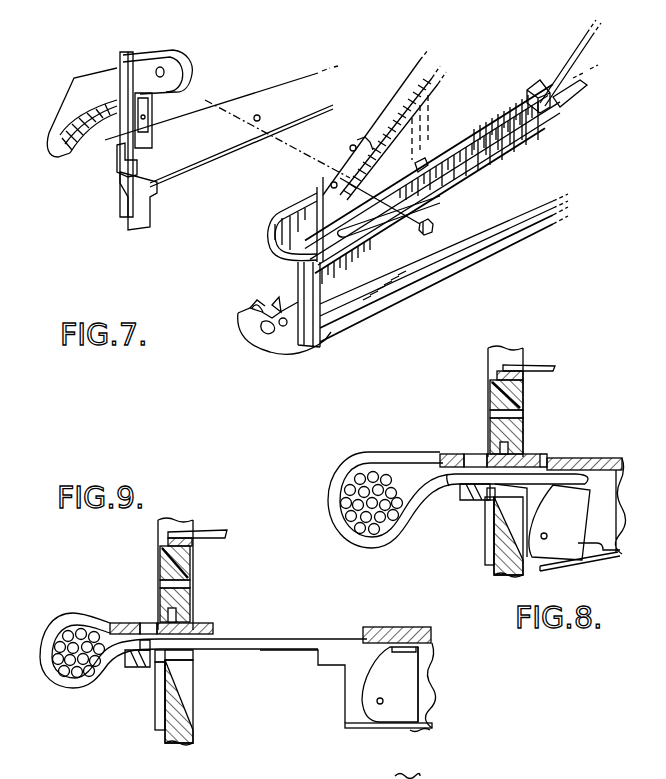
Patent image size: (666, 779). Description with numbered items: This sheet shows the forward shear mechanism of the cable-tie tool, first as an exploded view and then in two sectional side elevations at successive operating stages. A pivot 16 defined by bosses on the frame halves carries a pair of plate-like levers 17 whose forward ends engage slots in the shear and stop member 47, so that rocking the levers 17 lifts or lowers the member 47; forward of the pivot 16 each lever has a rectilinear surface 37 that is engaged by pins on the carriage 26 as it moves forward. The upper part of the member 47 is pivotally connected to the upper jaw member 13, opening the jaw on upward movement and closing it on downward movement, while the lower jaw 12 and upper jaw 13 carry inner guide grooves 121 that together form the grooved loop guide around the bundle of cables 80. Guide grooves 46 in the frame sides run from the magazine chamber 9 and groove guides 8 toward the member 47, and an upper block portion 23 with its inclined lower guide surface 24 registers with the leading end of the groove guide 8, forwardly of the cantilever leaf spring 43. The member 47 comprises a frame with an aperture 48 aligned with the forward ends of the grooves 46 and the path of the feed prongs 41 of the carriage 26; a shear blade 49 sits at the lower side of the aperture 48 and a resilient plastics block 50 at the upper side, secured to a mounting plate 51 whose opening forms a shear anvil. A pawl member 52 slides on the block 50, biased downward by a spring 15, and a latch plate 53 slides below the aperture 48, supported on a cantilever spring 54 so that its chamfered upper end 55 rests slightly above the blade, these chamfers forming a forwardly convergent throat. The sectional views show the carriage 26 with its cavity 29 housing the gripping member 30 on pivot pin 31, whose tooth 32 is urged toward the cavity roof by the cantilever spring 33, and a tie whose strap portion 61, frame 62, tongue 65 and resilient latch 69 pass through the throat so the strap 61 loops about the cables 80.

In FIG. 7, the groove guide 8 is at (560, 72).
In FIG. 7, the magazine chamber 9 is at (466, 111).
In FIG. 7, the lower jaw 12 is at (243, 333).
In FIG. 7, the guide groove 121 is at (258, 306).
In FIG. 7, the upper jaw member 13 is at (80, 88).
In FIG. 7, the spring 15 is at (330, 172).
In FIG. 8, the spring 15 is at (540, 368).
In FIG. 9, the spring 15 is at (213, 530).
In FIG. 7, the pivot 16 is at (420, 230).
In FIG. 7, the plate-like lever 17 is at (277, 113).
In FIG. 7, the upper block portion 23 is at (526, 97).
In FIG. 7, the lower guide surface 24 is at (545, 122).
In FIG. 8, the carriage 26 is at (575, 457).
In FIG. 9, the carriage 26 is at (378, 628).
In FIG. 8, the cavity 29 is at (613, 495).
In FIG. 9, the cavity 29 is at (425, 668).
In FIG. 8, the gripping member 30 is at (605, 556).
In FIG. 9, the pivot pin 31 is at (377, 701).
In FIG. 8, the tooth 32 is at (556, 490).
In FIG. 9, the tooth 32 is at (388, 648).
In FIG. 8, the cantilever spring 33 is at (555, 572).
In FIG. 9, the cantilever spring 33 is at (410, 726).
In FIG. 7, the rectilinear surface 37 is at (262, 104).
In FIG. 8, the feed prong 41 is at (515, 470).
In FIG. 9, the feed prong 41 is at (325, 668).
In FIG. 7, the cantilever leaf spring 43 is at (582, 92).
In FIG. 7, the guide groove 46 is at (422, 165).
In FIG. 7, the shear and stop member 47 is at (119, 160).
In FIG. 8, the aperture 48 is at (522, 455).
In FIG. 9, the aperture 48 is at (178, 658).
In FIG. 8, the shear blade 49 is at (497, 565).
In FIG. 9, the shear blade 49 is at (182, 695).
In FIG. 7, the block 50 is at (152, 118).
In FIG. 8, the block 50 is at (492, 394).
In FIG. 9, the block 50 is at (190, 560).
In FIG. 7, the mounting plate 51 is at (120, 88).
In FIG. 8, the mounting plate 51 is at (490, 414).
In FIG. 7, the pawl member 52 is at (152, 108).
In FIG. 8, the pawl member 52 is at (497, 374).
In FIG. 9, the pawl member 52 is at (180, 542).
In FIG. 7, the latch plate 53 is at (133, 225).
In FIG. 8, the latch plate 53 is at (487, 560).
In FIG. 9, the latch plate 53 is at (158, 700).
In FIG. 7, the cantilever spring 54 is at (310, 335).
In FIG. 8, the upper end 55 is at (490, 500).
In FIG. 9, the upper end 55 is at (155, 670).
In FIG. 8, the strap portion 61 is at (352, 488).
In FIG. 9, the strap portion 61 is at (62, 628).
In FIG. 8, the frame 62 is at (472, 500).
In FIG. 9, the frame 62 is at (133, 667).
In FIG. 8, the tongue 65 is at (545, 462).
In FIG. 9, the tongue 65 is at (207, 624).
In FIG. 8, the resilient latch 69 is at (462, 498).
In FIG. 9, the resilient latch 69 is at (147, 640).
In FIG. 8, the bundle of cables 80 is at (362, 525).
In FIG. 9, the bundle of cables 80 is at (57, 680).